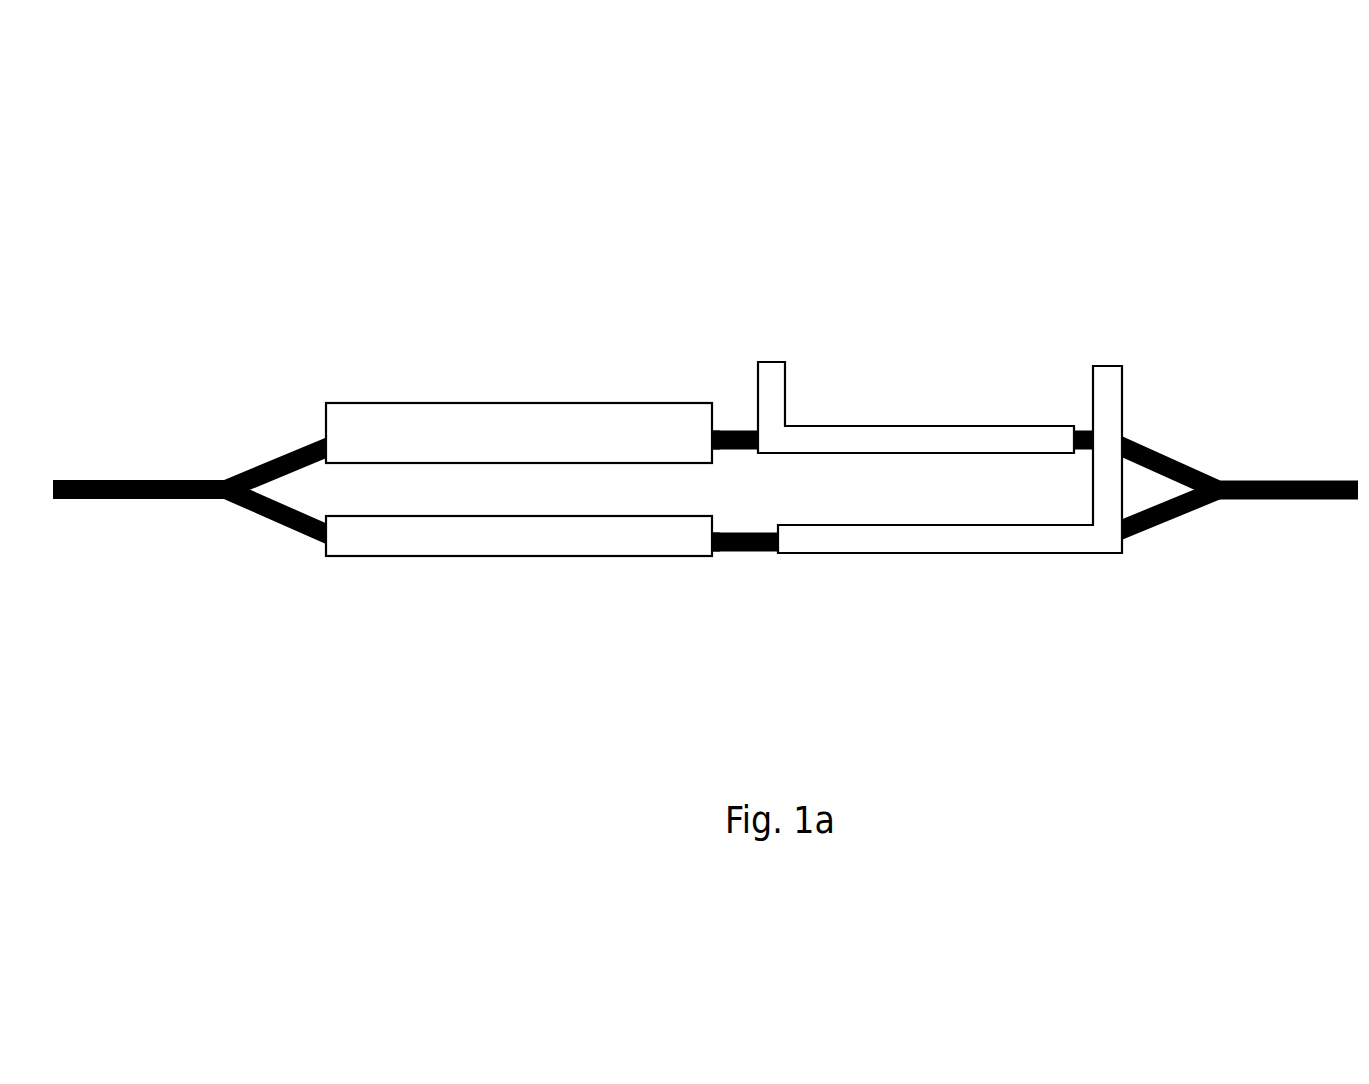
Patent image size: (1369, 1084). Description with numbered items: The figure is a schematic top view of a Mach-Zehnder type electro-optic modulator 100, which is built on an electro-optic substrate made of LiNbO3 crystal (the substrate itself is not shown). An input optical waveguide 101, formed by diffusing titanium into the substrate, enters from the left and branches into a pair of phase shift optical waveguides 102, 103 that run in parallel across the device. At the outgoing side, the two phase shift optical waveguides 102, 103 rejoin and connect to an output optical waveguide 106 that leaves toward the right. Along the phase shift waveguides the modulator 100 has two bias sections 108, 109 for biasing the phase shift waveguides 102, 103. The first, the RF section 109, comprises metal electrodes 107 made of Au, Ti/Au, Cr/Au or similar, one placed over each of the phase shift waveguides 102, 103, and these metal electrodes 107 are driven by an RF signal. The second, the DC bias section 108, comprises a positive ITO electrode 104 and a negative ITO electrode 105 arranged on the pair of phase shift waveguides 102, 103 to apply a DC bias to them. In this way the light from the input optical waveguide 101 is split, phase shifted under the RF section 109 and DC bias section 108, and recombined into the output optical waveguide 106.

The electro-optic modulator 100 is at (400, 259).
The input optical waveguide 101 is at (192, 478).
The phase shift optical waveguide 102 is at (285, 450).
The phase shift optical waveguide 103 is at (273, 520).
The ITO electrode 104 is at (815, 428).
The ITO electrode 105 is at (838, 553).
The output optical waveguide 106 is at (1235, 480).
The metal electrode 107 is at (387, 407).
The DC bias section 108 is at (1028, 400).
The RF section 109 is at (634, 380).